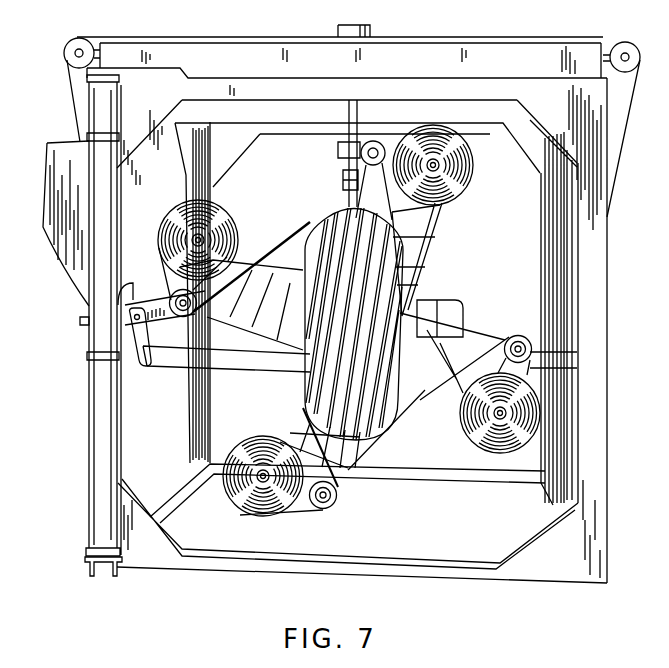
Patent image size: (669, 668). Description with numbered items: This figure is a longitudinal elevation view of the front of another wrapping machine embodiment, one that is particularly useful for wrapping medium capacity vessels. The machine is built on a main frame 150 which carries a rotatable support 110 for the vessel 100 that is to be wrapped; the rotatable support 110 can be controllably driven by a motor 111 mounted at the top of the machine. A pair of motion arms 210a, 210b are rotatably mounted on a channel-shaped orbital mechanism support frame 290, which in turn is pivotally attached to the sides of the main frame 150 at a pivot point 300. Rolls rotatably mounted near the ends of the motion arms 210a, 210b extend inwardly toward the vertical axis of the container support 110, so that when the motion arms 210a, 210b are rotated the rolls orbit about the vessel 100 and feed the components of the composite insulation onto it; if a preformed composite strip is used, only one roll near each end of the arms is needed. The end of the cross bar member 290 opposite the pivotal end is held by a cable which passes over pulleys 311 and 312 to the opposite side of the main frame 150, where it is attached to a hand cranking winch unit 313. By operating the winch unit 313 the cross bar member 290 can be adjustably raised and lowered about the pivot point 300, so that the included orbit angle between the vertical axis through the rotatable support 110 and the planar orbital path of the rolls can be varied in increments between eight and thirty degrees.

The vessel 100 is at (345, 228).
The rotatable support 110 is at (349, 113).
The motor 111 is at (372, 33).
The main frame 150 is at (150, 557).
The motion arm 210a is at (236, 322).
The motion arm 210b is at (423, 232).
The channel-shaped orbital mechanism support frame 290 is at (187, 363).
The pivot point 300 is at (138, 312).
The pulley 311 is at (625, 42).
The pulley 312 is at (68, 46).
The hand cranking winch unit 313 is at (82, 321).